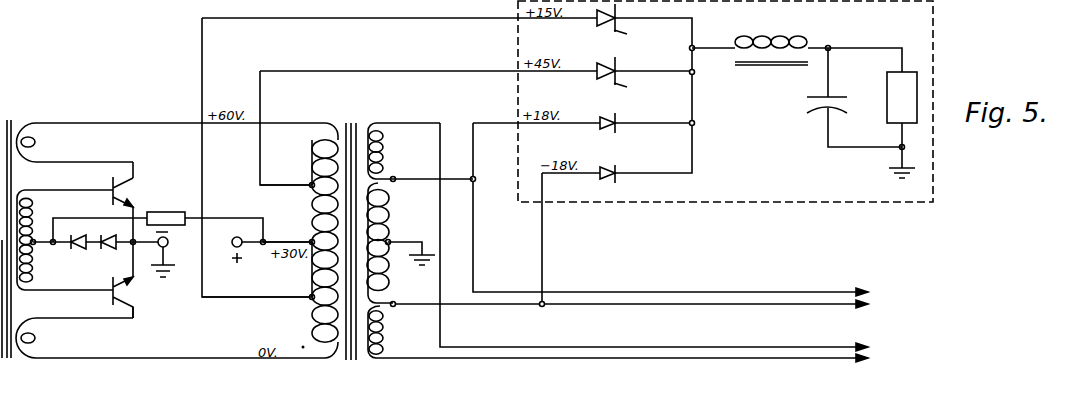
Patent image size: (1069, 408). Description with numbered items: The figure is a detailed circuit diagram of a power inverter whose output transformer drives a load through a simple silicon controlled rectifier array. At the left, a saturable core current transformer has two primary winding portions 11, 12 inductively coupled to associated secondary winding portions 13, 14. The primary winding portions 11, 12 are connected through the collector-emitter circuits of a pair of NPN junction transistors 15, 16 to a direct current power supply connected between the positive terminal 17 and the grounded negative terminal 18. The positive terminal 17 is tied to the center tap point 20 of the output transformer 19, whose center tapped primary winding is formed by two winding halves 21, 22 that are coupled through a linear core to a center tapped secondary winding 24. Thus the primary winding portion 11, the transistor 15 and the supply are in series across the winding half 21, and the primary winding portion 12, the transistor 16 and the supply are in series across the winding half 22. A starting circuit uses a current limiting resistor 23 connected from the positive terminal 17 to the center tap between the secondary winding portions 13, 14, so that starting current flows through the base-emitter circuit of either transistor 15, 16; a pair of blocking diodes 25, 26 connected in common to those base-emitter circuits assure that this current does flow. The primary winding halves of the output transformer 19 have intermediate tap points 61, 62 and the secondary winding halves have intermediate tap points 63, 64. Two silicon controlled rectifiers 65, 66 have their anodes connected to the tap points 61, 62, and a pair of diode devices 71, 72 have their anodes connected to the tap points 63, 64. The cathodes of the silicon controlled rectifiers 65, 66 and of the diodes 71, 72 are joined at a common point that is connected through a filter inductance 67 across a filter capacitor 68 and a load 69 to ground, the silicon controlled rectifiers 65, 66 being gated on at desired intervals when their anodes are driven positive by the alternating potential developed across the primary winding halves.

The primary winding portion 11 is at (36, 141).
The primary winding portion 12 is at (36, 338).
The secondary winding portion 13 is at (32, 206).
The secondary winding portion 14 is at (32, 268).
The NPN junction transistor 15 is at (111, 180).
The NPN junction transistor 16 is at (111, 303).
The positive terminal 17 is at (232, 240).
The grounded negative terminal 18 is at (168, 242).
The output transformer 19 is at (342, 122).
The center tap point 20 is at (311, 240).
The primary winding half 21 is at (312, 146).
The primary winding half 22 is at (312, 284).
The current limiting resistor 23 is at (163, 212).
The secondary winding 24 is at (422, 220).
The blocking diode 25 is at (76, 250).
The blocking diode 26 is at (105, 250).
The intermediate tap point 61 is at (311, 184).
The intermediate tap point 62 is at (311, 298).
The intermediate tap point 63 is at (393, 177).
The intermediate tap point 64 is at (394, 306).
The silicon controlled rectifier 65 is at (598, 76).
The silicon controlled rectifier 66 is at (598, 24).
The filter inductance 67 is at (772, 42).
The filter capacitor 68 is at (815, 96).
The load 69 is at (888, 85).
The diode device 71 is at (617, 129).
The diode device 72 is at (617, 180).